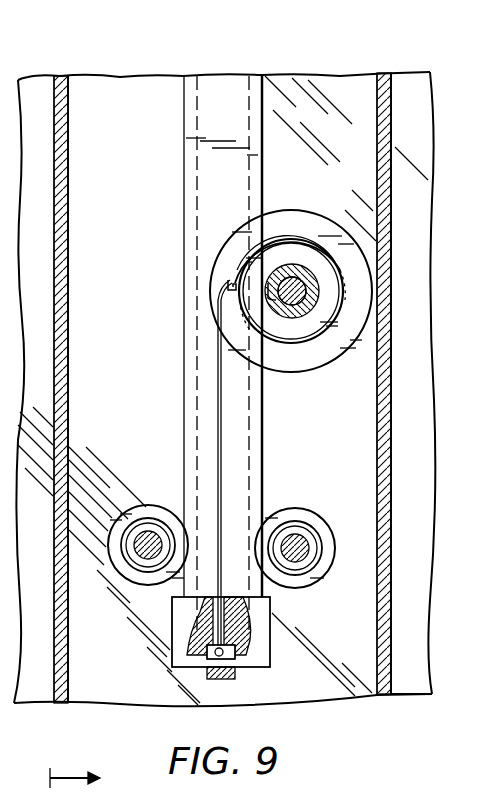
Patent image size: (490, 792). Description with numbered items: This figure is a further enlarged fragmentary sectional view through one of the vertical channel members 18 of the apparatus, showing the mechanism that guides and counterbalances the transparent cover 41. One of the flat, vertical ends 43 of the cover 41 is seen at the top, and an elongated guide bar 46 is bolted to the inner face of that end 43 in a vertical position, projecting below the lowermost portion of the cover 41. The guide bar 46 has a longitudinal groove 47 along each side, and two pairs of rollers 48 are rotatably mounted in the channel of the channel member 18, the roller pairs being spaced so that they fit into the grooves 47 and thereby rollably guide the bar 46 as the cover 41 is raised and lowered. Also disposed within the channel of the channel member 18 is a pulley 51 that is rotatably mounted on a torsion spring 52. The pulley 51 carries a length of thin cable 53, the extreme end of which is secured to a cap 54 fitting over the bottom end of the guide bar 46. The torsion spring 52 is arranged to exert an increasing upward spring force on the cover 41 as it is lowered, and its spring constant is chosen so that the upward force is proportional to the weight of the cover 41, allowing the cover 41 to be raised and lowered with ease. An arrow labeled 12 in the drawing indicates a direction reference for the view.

The direction arrow 12 is at (75, 765).
The channel member 18 is at (390, 90).
The transparent cover 41 is at (413, 692).
The vertical end 43 is at (122, 93).
The guide bar 46 is at (264, 134).
The longitudinal groove 47 is at (196, 181).
The rollers 48 is at (118, 584).
The pulley 51 is at (333, 220).
The torsion spring 52 is at (297, 243).
The cable 53 is at (222, 432).
The cap 54 is at (172, 656).